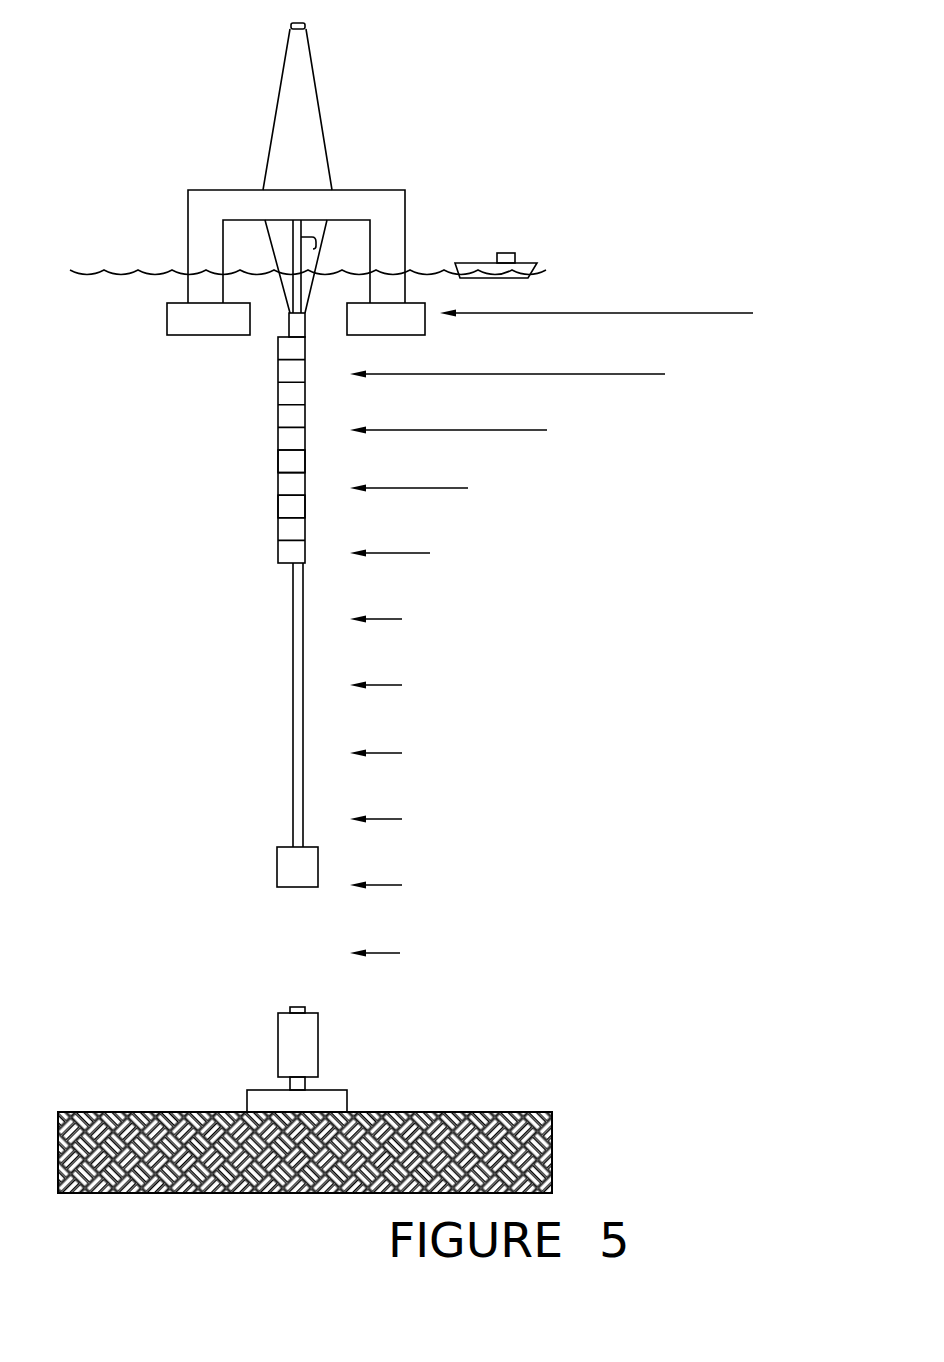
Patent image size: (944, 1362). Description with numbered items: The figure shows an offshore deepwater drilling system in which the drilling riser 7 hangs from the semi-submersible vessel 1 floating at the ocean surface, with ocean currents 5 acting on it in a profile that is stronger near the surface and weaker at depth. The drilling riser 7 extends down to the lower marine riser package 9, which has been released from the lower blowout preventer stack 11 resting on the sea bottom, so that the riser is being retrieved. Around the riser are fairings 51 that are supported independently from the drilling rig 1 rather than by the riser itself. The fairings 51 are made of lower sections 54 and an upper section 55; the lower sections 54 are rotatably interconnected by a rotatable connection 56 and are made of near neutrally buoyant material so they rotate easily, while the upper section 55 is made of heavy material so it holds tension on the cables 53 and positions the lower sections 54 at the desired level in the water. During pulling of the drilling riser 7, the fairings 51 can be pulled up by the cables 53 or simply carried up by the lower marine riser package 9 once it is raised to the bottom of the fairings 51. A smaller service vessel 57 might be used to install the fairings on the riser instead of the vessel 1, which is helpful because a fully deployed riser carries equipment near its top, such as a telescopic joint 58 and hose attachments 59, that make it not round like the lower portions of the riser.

The vessel 1 is at (330, 127).
The ocean currents 5 is at (598, 302).
The drilling riser 7 is at (307, 743).
The lower marine riser package 9 is at (326, 873).
The lower blowout preventer stack 11 is at (323, 1047).
The fairings 51 is at (310, 414).
The cables 53 is at (317, 257).
The lower sections 54 is at (305, 462).
The upper section 55 is at (305, 335).
The rotatable connection 56 is at (305, 517).
The service vessel 57 is at (513, 248).
The telescopic joint 58 is at (300, 292).
The hose attachments 59 is at (323, 220).